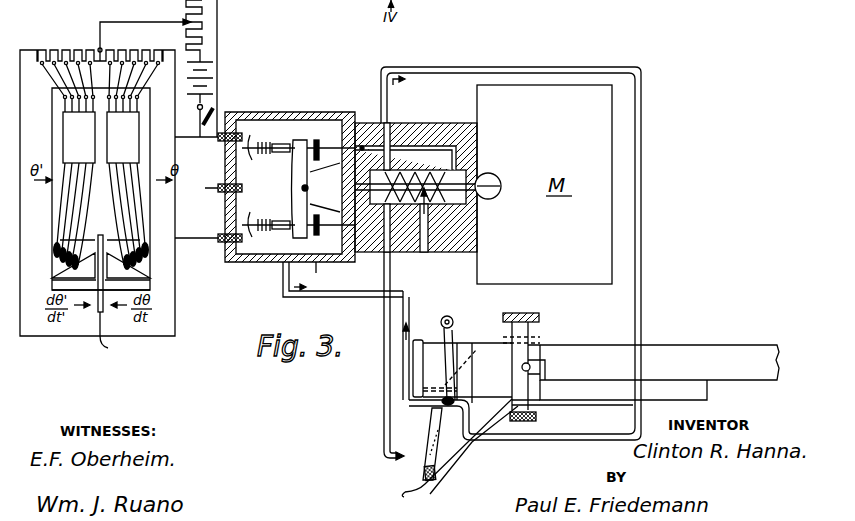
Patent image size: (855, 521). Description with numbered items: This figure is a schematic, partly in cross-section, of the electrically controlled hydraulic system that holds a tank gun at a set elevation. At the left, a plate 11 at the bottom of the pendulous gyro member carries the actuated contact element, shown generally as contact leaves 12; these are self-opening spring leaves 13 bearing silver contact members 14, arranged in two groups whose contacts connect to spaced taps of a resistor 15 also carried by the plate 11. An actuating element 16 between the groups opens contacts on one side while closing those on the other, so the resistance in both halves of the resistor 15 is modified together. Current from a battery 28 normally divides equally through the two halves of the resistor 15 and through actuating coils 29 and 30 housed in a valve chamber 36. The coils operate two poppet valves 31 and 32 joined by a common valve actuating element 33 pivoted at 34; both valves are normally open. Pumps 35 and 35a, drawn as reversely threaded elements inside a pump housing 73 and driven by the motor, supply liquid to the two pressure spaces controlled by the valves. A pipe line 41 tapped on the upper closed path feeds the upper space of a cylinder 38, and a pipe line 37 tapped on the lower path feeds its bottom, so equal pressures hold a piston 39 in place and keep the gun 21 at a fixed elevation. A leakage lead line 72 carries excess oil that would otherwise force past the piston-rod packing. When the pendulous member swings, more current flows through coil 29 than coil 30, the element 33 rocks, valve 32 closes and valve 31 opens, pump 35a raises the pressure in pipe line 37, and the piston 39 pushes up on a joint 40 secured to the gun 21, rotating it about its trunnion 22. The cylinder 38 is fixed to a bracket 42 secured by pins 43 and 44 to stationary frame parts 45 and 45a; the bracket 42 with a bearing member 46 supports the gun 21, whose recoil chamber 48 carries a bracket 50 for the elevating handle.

The plate 11 is at (56, 127).
The contact leaves 12 is at (172, 158).
The self-opening spring leaves 13 is at (78, 213).
The contact members 14 is at (58, 250).
The resistor 15 is at (122, 60).
The actuating element 16 is at (109, 298).
The battery 28 is at (212, 67).
The actuating coil 29 is at (264, 147).
The actuating coil 30 is at (260, 245).
The valve 31 is at (340, 128).
The valve 32 is at (316, 262).
The valve actuating element 33 is at (302, 168).
The pivot 34 is at (304, 190).
The pump 35 is at (432, 250).
The pump 35a is at (384, 140).
The valve chamber 36 is at (256, 106).
The pipe line 37 is at (383, 266).
The cylinder 38 is at (437, 444).
The piston 39 is at (437, 428).
The joint 40 is at (453, 326).
The pipe line 41 is at (546, 67).
The bracket 42 is at (470, 445).
The pin 43 is at (520, 313).
The pin 44 is at (533, 421).
The stationary frame part 45 is at (535, 322).
The stationary frame part 45a is at (545, 413).
The bearing member 46 is at (546, 377).
The recoil chamber 48 is at (687, 400).
The bracket 50 is at (470, 365).
The gun 21 is at (693, 348).
The trunnion 22 is at (531, 366).
The leakage lead line 72 is at (410, 300).
The pump housing 73 is at (438, 123).